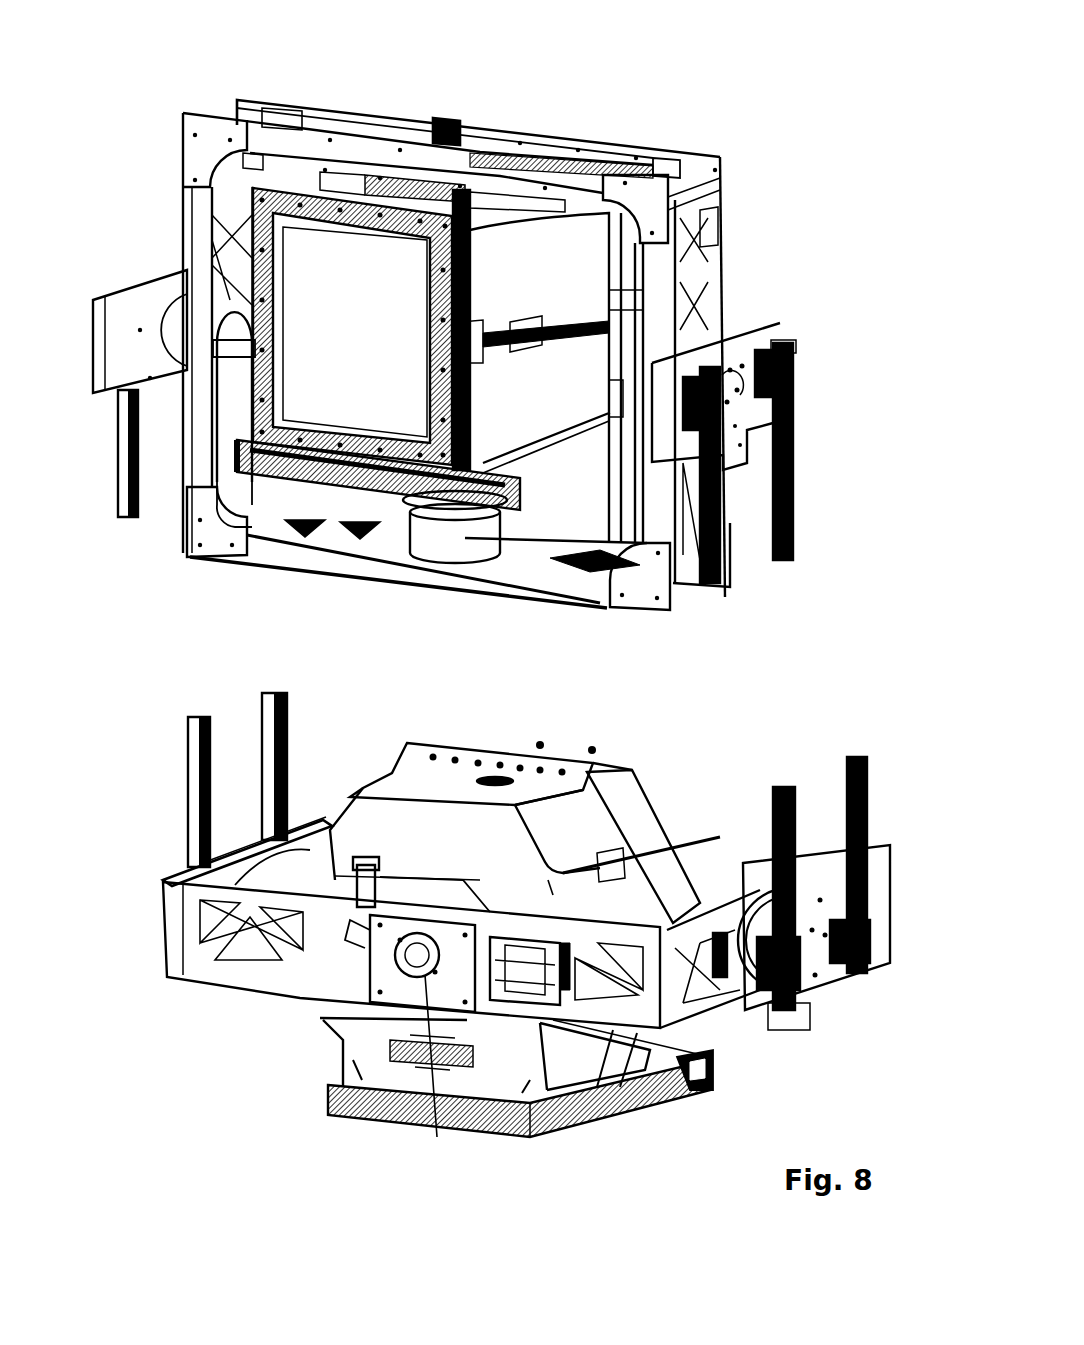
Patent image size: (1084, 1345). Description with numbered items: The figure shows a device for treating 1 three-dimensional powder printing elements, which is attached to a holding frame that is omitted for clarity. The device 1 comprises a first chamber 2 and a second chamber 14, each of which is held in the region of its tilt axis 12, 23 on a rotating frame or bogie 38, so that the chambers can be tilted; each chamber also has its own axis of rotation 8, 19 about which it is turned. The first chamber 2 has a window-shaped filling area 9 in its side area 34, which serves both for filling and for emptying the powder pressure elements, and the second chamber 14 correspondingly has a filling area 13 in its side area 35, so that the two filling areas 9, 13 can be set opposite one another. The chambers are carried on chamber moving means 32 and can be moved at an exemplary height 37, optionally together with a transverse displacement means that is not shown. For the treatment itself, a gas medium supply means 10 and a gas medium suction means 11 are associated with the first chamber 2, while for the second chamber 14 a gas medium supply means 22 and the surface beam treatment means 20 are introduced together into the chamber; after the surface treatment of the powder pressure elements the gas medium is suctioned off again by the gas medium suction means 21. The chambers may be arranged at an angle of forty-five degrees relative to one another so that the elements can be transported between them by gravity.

The device for treating 1 is at (699, 91).
The first chamber 2 is at (158, 564).
The axis of rotation 8 is at (456, 541).
The filling area 9 is at (350, 346).
The gas medium supply means 10 is at (472, 94).
The gas medium suction means 11 is at (426, 562).
The tilt axis 12 is at (752, 374).
The filling area 13 is at (539, 1153).
The second chamber 14 is at (157, 829).
The axis of rotation 19 is at (667, 790).
The surface beam treatment means 20 is at (437, 1075).
The gas medium suction means 21 is at (686, 824).
The gas medium supply means 22 is at (432, 957).
The tilt axis 23 is at (852, 930).
The chamber moving means 32 is at (101, 469).
The side area 34 is at (298, 537).
The side area 35 is at (722, 1091).
The height 37 is at (808, 388).
The bogie 38 is at (563, 134).